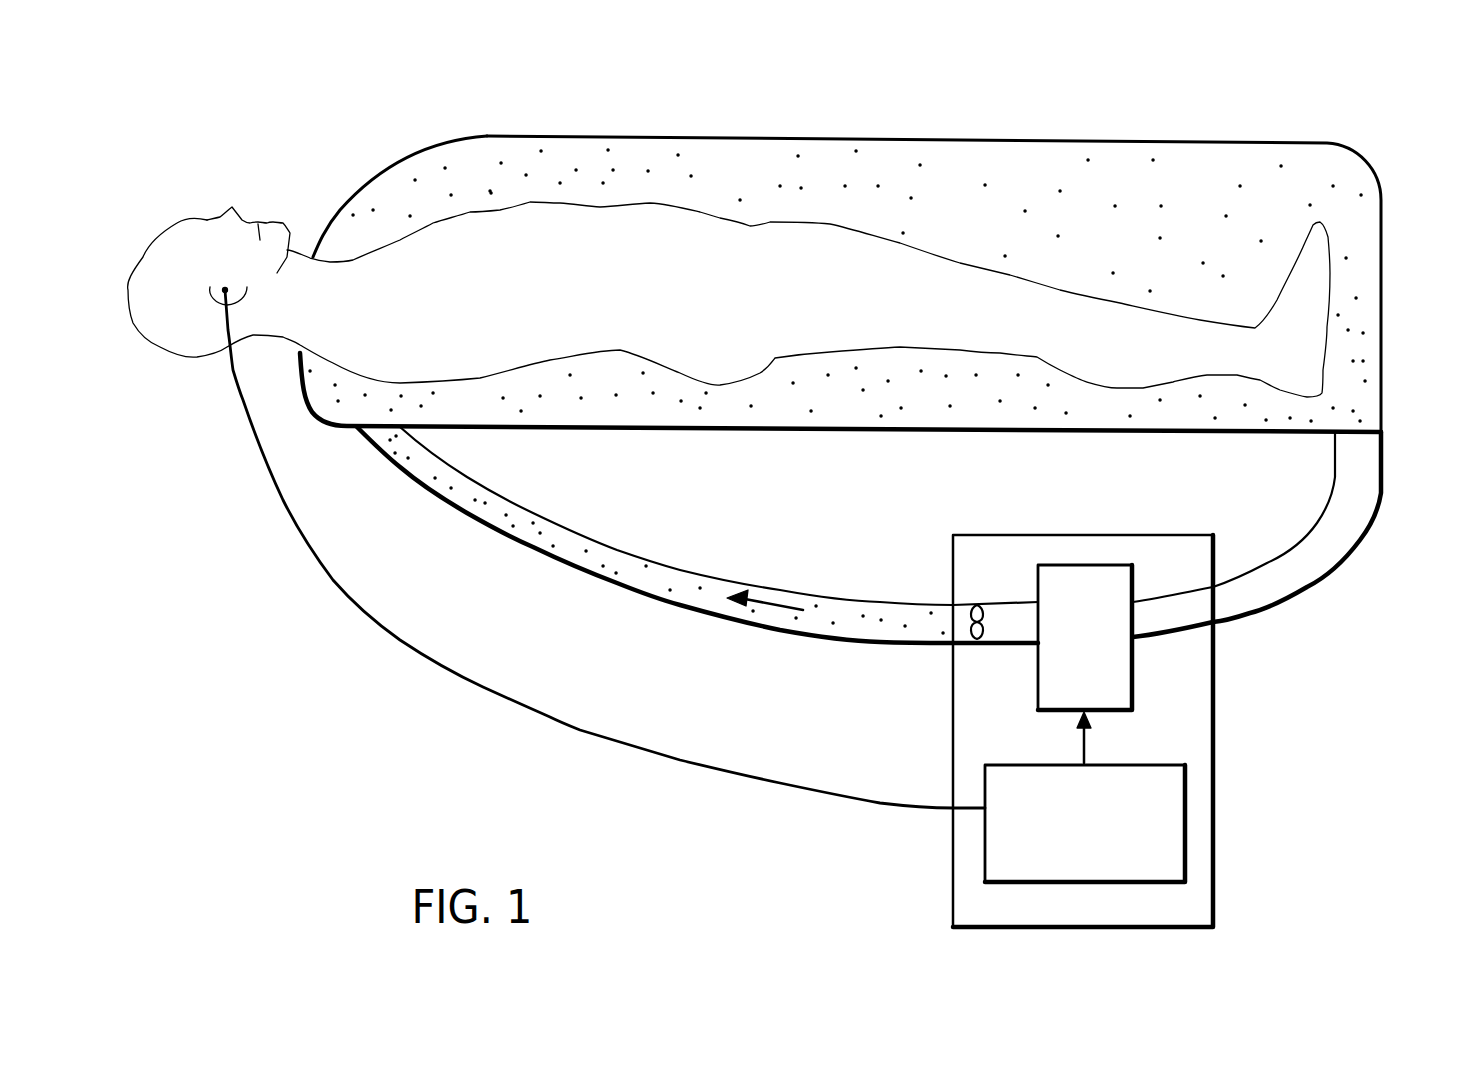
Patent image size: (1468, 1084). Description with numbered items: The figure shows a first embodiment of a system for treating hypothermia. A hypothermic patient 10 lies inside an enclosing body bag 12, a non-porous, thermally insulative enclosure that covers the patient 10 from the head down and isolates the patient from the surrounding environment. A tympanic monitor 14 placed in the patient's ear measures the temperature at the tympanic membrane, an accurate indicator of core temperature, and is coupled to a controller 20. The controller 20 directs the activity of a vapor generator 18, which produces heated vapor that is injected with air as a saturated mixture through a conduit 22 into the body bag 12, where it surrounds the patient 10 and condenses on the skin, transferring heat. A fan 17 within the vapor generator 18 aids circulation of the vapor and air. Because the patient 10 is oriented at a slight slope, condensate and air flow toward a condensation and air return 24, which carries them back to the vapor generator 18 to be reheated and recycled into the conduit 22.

The hypothermic patient 10 is at (158, 243).
The enclosing body bag 12 is at (967, 163).
The tympanic monitor 14 is at (223, 292).
The fan 17 is at (982, 605).
The vapor generator 18 is at (1118, 692).
The controller 20 is at (992, 850).
The conduit 22 is at (702, 602).
The condensation and air return 24 is at (1363, 493).